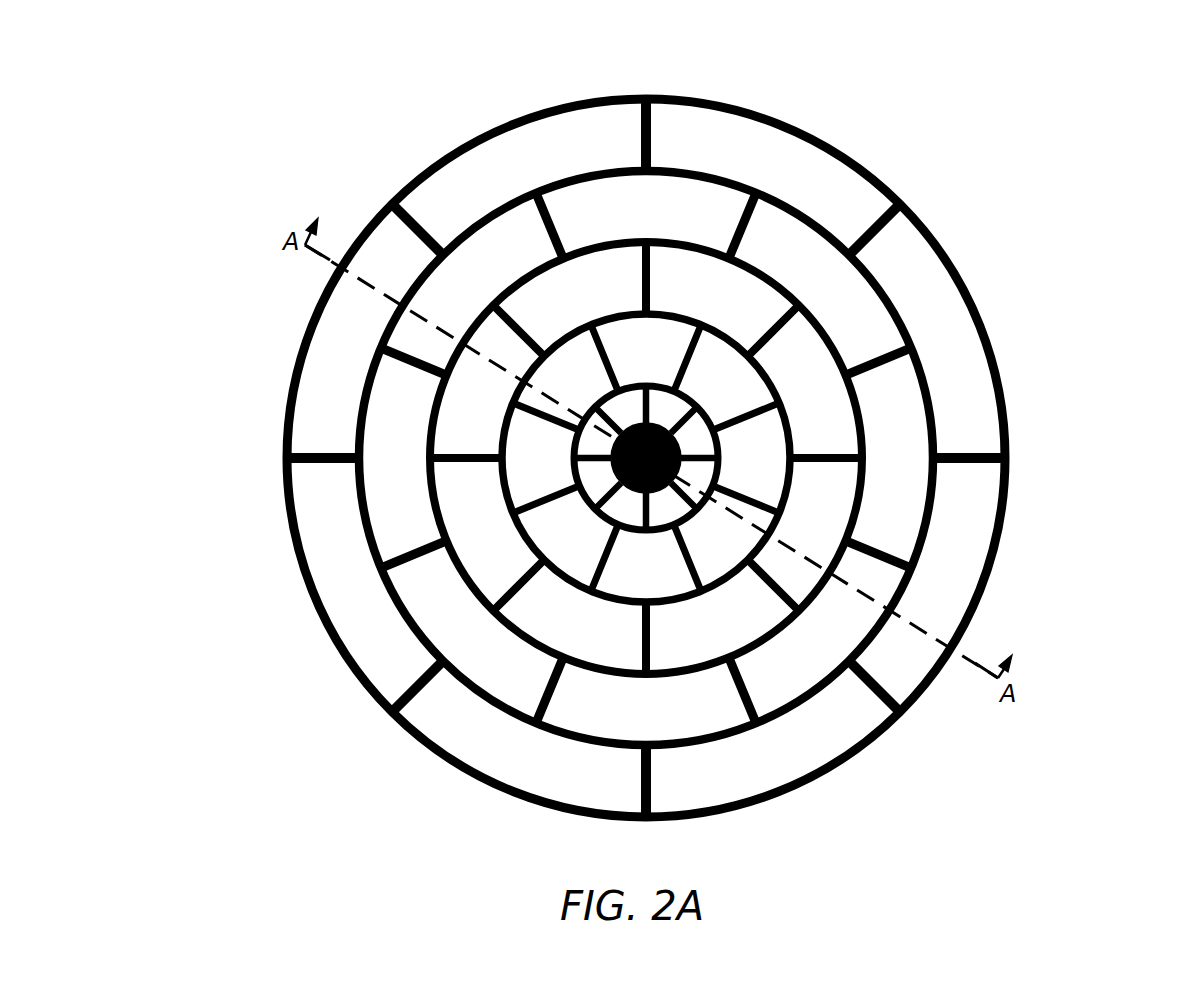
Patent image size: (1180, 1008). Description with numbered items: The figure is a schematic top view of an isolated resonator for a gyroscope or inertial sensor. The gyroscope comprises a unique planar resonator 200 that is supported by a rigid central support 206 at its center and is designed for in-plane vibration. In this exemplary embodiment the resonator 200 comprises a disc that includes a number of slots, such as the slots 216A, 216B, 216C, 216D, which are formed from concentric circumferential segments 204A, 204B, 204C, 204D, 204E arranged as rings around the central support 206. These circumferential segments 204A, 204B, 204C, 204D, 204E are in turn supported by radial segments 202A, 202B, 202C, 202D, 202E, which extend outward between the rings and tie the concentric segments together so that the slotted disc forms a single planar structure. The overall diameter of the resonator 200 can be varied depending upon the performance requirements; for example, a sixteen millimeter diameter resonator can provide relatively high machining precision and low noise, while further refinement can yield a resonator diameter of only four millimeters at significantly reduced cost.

The planar resonator 200 is at (951, 61).
The radial segment 202A is at (703, 466).
The radial segment 202B is at (746, 421).
The radial segment 202C is at (782, 332).
The radial segment 202D is at (764, 236).
The radial segment 202E is at (652, 132).
The circumferential segment 204A is at (592, 472).
The circumferential segment 204B is at (524, 542).
The circumferential segment 204C is at (474, 600).
The circumferential segment 204D is at (468, 697).
The circumferential segment 204E is at (461, 776).
The rigid central support 206 is at (641, 426).
The slot 216A is at (375, 244).
The slot 216B is at (494, 328).
The slot 216C is at (829, 523).
The slot 216D is at (952, 596).